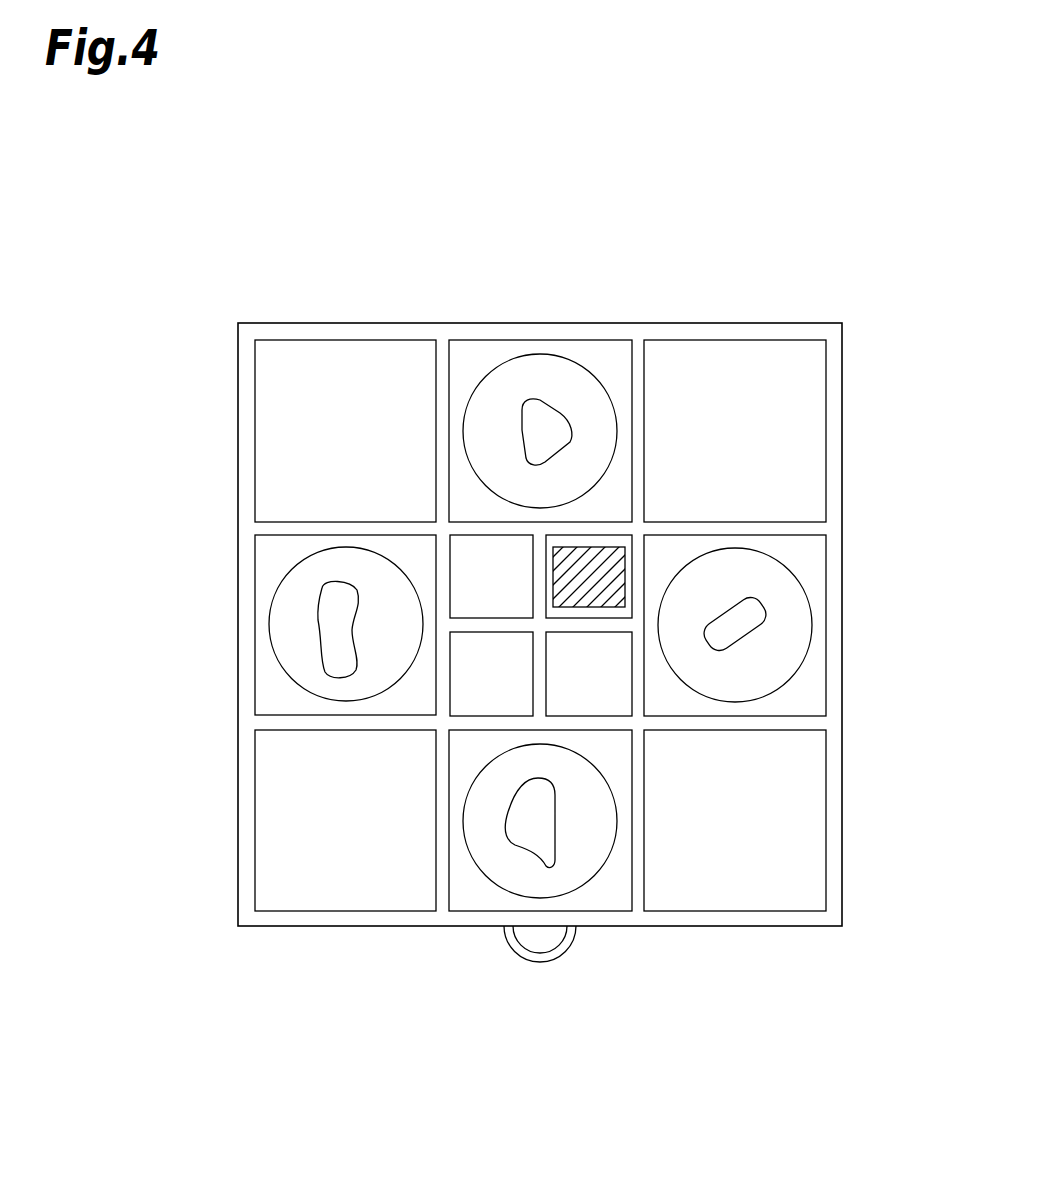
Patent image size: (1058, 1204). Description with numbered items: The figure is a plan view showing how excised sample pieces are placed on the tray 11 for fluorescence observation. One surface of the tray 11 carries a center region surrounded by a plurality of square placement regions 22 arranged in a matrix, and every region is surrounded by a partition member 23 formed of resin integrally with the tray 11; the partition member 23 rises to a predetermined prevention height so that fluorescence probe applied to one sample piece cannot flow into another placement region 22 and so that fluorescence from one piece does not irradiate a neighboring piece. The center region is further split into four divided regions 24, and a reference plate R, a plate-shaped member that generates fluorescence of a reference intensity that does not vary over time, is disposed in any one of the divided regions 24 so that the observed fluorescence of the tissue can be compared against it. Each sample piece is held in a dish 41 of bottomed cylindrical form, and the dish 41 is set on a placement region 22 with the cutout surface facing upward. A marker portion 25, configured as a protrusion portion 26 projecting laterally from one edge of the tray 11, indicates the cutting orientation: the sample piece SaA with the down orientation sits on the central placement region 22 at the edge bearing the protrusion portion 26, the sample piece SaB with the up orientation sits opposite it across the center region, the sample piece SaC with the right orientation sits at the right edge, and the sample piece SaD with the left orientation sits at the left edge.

The tray 11 is at (180, 298).
The placement region 22 is at (473, 355).
The partition member 23 is at (290, 527).
The divided region 24 is at (593, 540).
The marker portion 25 is at (540, 939).
The protrusion portion 26 is at (542, 945).
The dish 41 is at (512, 360).
The reference plate R is at (595, 592).
The sample piece SaA is at (517, 848).
The sample piece SaB is at (565, 402).
The sample piece SaC is at (750, 636).
The sample piece SaD is at (318, 617).